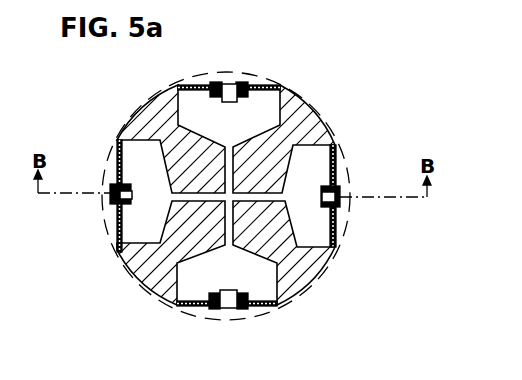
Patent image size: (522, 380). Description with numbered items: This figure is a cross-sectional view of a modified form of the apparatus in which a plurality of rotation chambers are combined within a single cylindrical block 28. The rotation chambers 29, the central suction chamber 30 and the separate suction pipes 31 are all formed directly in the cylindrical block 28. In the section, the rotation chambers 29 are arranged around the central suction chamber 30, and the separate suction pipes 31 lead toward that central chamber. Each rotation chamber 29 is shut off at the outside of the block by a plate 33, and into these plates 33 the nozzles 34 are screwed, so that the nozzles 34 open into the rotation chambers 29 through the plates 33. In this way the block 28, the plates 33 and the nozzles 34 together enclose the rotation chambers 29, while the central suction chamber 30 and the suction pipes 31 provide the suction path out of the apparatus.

The cylindrical block 28 is at (308, 118).
The rotation chamber 29 is at (121, 229).
The central suction chamber 30 is at (232, 205).
The separate suction pipe 31 is at (228, 147).
The plate 33 is at (336, 165).
The nozzle 34 is at (109, 198).